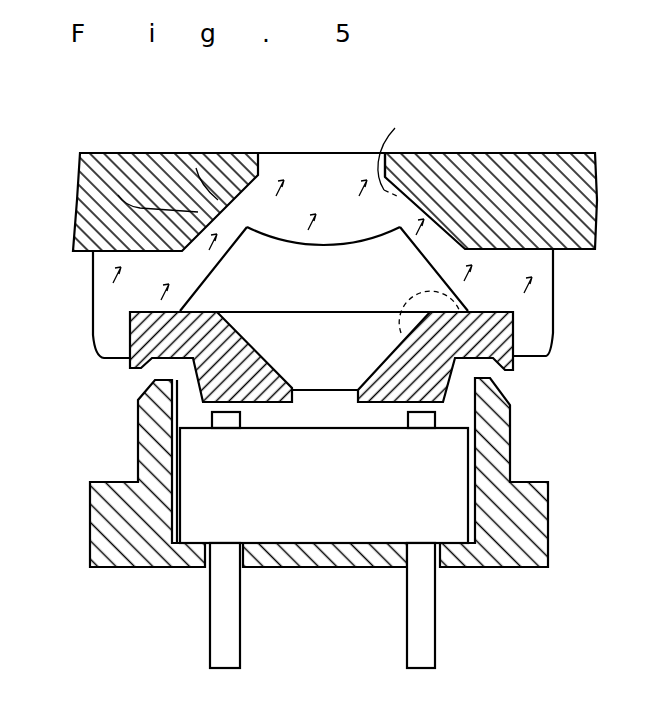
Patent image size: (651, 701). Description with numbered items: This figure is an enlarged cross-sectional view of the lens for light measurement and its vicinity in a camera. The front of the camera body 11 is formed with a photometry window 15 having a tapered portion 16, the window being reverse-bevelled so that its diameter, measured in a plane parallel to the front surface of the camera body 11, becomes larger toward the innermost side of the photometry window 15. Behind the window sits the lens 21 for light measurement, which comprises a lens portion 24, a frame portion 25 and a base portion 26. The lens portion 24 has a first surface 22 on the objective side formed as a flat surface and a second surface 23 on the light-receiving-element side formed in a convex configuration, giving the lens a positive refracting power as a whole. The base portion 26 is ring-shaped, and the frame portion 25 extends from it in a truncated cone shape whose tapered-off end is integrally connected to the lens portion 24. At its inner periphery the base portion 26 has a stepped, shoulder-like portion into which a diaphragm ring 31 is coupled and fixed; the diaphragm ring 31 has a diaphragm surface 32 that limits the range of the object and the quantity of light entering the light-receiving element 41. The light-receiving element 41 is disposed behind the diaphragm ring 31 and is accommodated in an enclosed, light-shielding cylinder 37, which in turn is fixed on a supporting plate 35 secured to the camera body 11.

The camera body 11 is at (533, 197).
The photometry window 15 is at (257, 152).
The tapered portion 16 is at (400, 135).
The lens for light measurement 21 is at (317, 185).
The first surface 22 is at (360, 148).
The second surface 23 is at (312, 247).
The lens portion 24 is at (196, 168).
The frame portion 25 is at (118, 195).
The base portion 26 is at (107, 287).
The diaphragm ring 31 is at (563, 314).
The diaphragm surface 32 is at (562, 285).
The supporting plate 35 is at (110, 568).
The enclosed cylinder 37 is at (517, 440).
The light-receiving element 41 is at (337, 537).